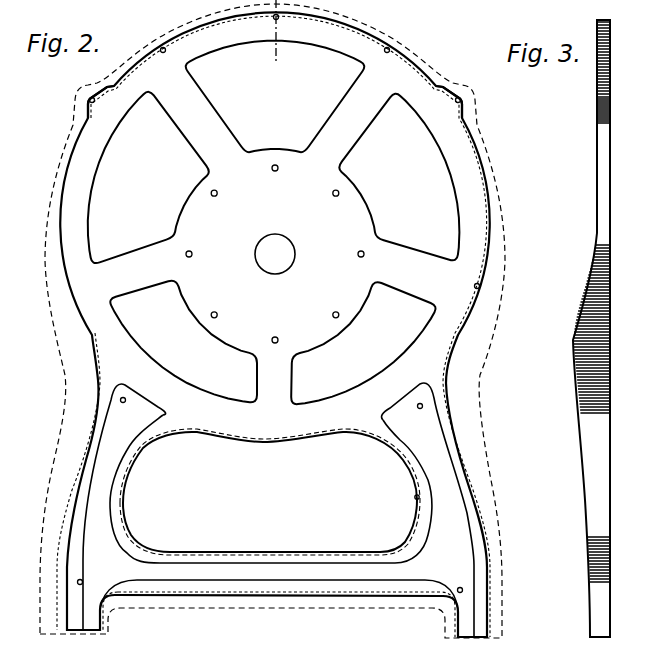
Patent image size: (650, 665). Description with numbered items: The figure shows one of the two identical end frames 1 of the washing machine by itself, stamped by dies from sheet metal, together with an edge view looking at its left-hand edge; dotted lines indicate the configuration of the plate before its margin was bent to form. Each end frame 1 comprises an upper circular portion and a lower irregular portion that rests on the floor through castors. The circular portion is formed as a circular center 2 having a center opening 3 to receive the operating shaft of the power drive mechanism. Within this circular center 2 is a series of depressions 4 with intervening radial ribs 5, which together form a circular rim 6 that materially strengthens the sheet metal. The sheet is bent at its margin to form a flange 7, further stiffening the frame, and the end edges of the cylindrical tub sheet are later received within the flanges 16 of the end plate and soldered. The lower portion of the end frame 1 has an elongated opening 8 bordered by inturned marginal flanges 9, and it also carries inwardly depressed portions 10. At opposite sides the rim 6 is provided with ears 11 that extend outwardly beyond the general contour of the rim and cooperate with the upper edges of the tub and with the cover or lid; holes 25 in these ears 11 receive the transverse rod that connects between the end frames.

In FIG. 2, the end frame 1 is at (66, 162).
In FIG. 3, the end frame 1 is at (610, 224).
In FIG. 2, the circular center 2 is at (275, 254).
In FIG. 2, the center opening 3 is at (275, 254).
In FIG. 2, the depressions 4 is at (270, 637).
In FIG. 2, the radial ribs 5 is at (299, 253).
In FIG. 2, the circular rim 6 is at (223, 664).
In FIG. 2, the flange 7 is at (481, 286).
In FIG. 3, the flange 7 is at (582, 288).
In FIG. 2, the elongated opening 8 is at (279, 515).
In FIG. 2, the inturned marginal flanges 9 is at (414, 499).
In FIG. 2, the inwardly depressed portions 10 is at (278, 510).
In FIG. 2, the ears 11 is at (85, 106).
In FIG. 3, the ears 11 is at (596, 121).
In FIG. 2, the flanges 16 is at (292, 658).
In FIG. 2, the holes 25 is at (89, 96).